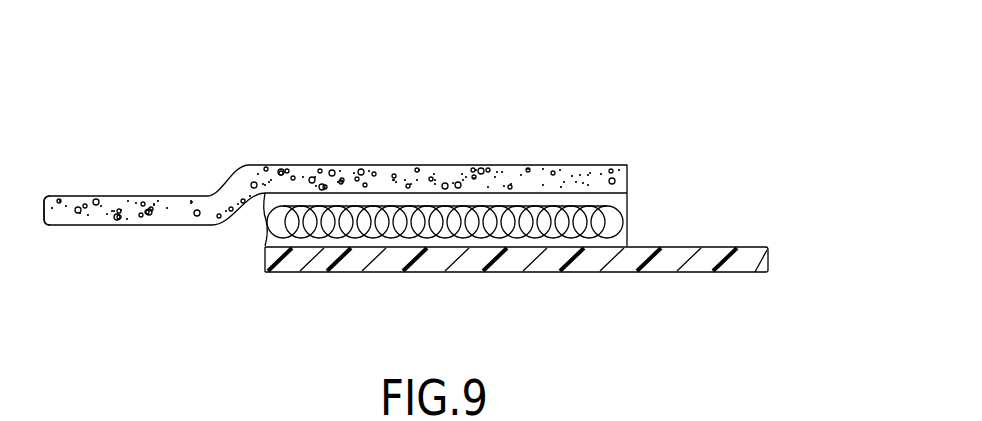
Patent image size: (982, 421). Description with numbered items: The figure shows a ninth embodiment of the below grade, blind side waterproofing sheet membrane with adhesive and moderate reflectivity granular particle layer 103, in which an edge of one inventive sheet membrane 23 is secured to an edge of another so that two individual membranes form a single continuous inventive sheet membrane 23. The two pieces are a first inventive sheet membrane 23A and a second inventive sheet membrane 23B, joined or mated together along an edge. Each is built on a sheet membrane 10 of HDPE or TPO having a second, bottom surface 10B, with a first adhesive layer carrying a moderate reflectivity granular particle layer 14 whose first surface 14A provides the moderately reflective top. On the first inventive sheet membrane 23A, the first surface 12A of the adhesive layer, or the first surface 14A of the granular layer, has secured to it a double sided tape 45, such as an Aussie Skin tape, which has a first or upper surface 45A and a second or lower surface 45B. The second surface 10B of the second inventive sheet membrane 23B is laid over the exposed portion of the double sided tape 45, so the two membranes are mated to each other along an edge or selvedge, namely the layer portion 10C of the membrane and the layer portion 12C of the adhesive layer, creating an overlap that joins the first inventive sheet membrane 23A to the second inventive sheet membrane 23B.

The ninth embodiment of the waterproofing sheet membrane 103 is at (619, 96).
The sheet membrane 10 is at (123, 227).
The second surface of the sheet membrane 10B is at (167, 226).
The layer portion of the membrane 10C is at (575, 163).
The moderate reflectivity granular particle layer 14 is at (178, 201).
The first surface of the moderate reflectivity granular particle layer 14A is at (137, 196).
The waterproofing sheet membrane with adhesive and moderate reflectivity granular pa 23 is at (73, 196).
The first inventive sheet membrane 23A is at (745, 247).
The second inventive sheet membrane 23B is at (98, 197).
The first surface of the first adhesive layer 12A is at (514, 248).
The layer portion of the first adhesive layer 12C is at (330, 247).
The double sided tape 45 is at (597, 220).
The first surface of the double sided tape 45A is at (365, 203).
The second surface of the double sided tape 45B is at (437, 244).